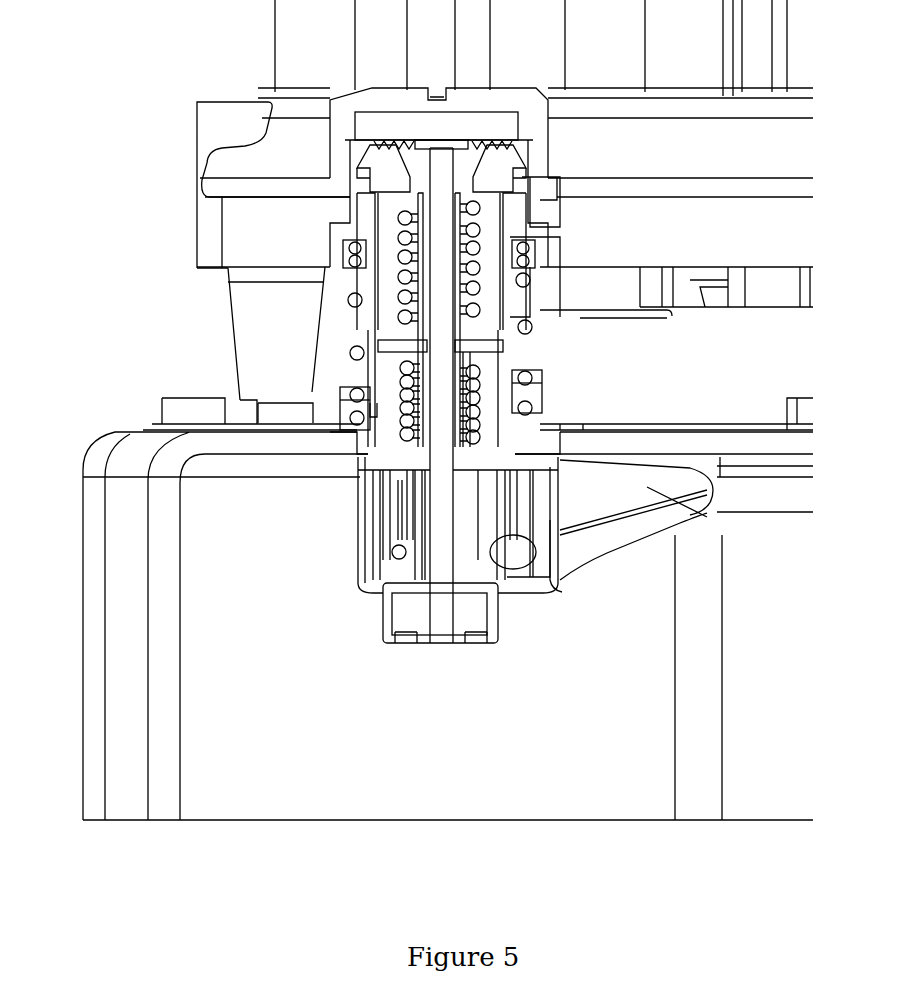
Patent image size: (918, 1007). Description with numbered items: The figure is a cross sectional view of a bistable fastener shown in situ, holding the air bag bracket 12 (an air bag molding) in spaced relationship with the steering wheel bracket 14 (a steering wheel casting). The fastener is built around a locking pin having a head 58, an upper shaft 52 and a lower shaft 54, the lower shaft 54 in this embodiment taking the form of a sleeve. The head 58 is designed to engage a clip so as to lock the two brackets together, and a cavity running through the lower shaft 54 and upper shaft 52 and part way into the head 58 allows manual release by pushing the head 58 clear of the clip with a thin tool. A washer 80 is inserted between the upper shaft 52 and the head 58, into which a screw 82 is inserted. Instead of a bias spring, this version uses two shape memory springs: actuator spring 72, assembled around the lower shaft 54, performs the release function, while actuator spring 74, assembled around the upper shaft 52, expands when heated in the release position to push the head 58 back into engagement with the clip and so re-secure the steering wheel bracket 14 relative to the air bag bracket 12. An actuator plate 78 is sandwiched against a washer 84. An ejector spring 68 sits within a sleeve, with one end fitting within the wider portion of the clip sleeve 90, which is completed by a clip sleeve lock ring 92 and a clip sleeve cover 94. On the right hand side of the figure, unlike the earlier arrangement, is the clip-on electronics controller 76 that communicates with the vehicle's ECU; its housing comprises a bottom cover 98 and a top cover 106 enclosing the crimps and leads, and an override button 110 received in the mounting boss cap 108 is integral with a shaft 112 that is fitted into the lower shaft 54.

The air bag bracket 12 is at (233, 442).
The steering wheel bracket 14 is at (260, 163).
The upper shaft 52 is at (432, 276).
The lower shaft 54 is at (400, 384).
The head 58 is at (408, 150).
The ejector spring 68 is at (360, 352).
The actuator spring 72 is at (482, 400).
The actuator spring 74 is at (400, 218).
The clip-on electronics controller 76 is at (608, 553).
The actuator plate 78 is at (498, 343).
The washer 80 is at (473, 200).
The screw 82 is at (437, 163).
The washer 84 is at (470, 360).
The clip sleeve 90 is at (538, 241).
The clip sleeve lock ring 92 is at (550, 190).
The clip sleeve cover 94 is at (340, 100).
The bottom cover 98 is at (700, 493).
The top cover 106 is at (580, 587).
The mounting boss cap 108 is at (383, 606).
The override button 110 is at (418, 643).
The shaft 112 is at (437, 513).